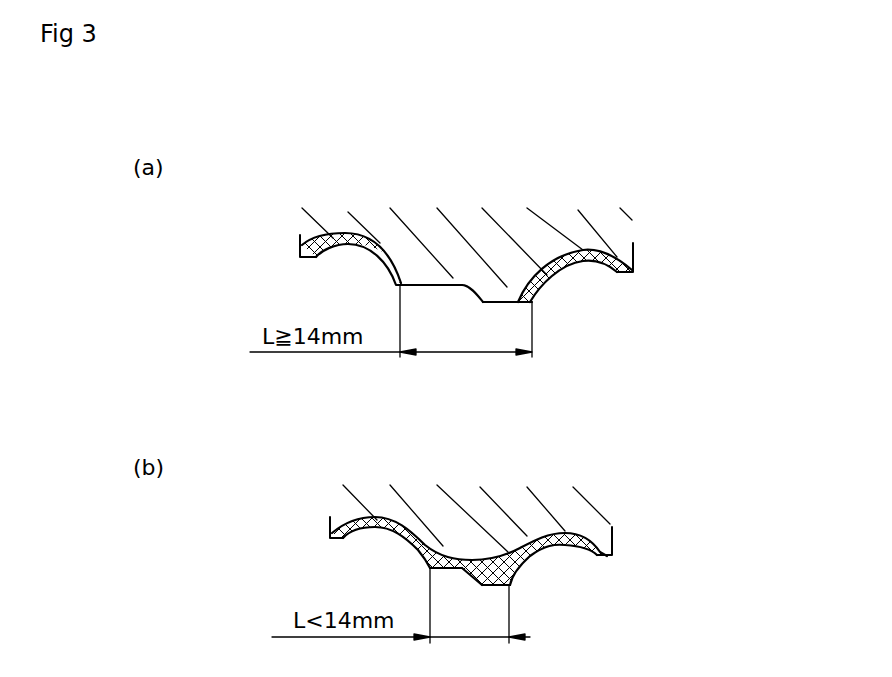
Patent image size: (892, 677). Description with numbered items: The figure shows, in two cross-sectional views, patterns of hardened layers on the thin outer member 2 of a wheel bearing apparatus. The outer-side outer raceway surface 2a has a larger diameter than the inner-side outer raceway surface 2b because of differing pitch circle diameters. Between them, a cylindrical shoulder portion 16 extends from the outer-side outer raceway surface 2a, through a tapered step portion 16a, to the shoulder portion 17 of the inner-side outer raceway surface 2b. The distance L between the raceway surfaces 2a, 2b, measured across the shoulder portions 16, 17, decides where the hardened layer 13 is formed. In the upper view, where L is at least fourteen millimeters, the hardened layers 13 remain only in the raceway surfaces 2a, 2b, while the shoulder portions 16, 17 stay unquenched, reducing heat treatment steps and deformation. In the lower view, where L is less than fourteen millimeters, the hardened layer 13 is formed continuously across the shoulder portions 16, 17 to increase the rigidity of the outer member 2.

The outer member 2 is at (540, 237).
The outer-side outer raceway surface 2a is at (380, 243).
The inner-side outer raceway surface 2b is at (550, 277).
The hardened layer 13 is at (317, 243).
The cylindrical shoulder portion 16 is at (443, 285).
The tapered step portion 16a is at (480, 286).
The shoulder portion 17 is at (495, 302).